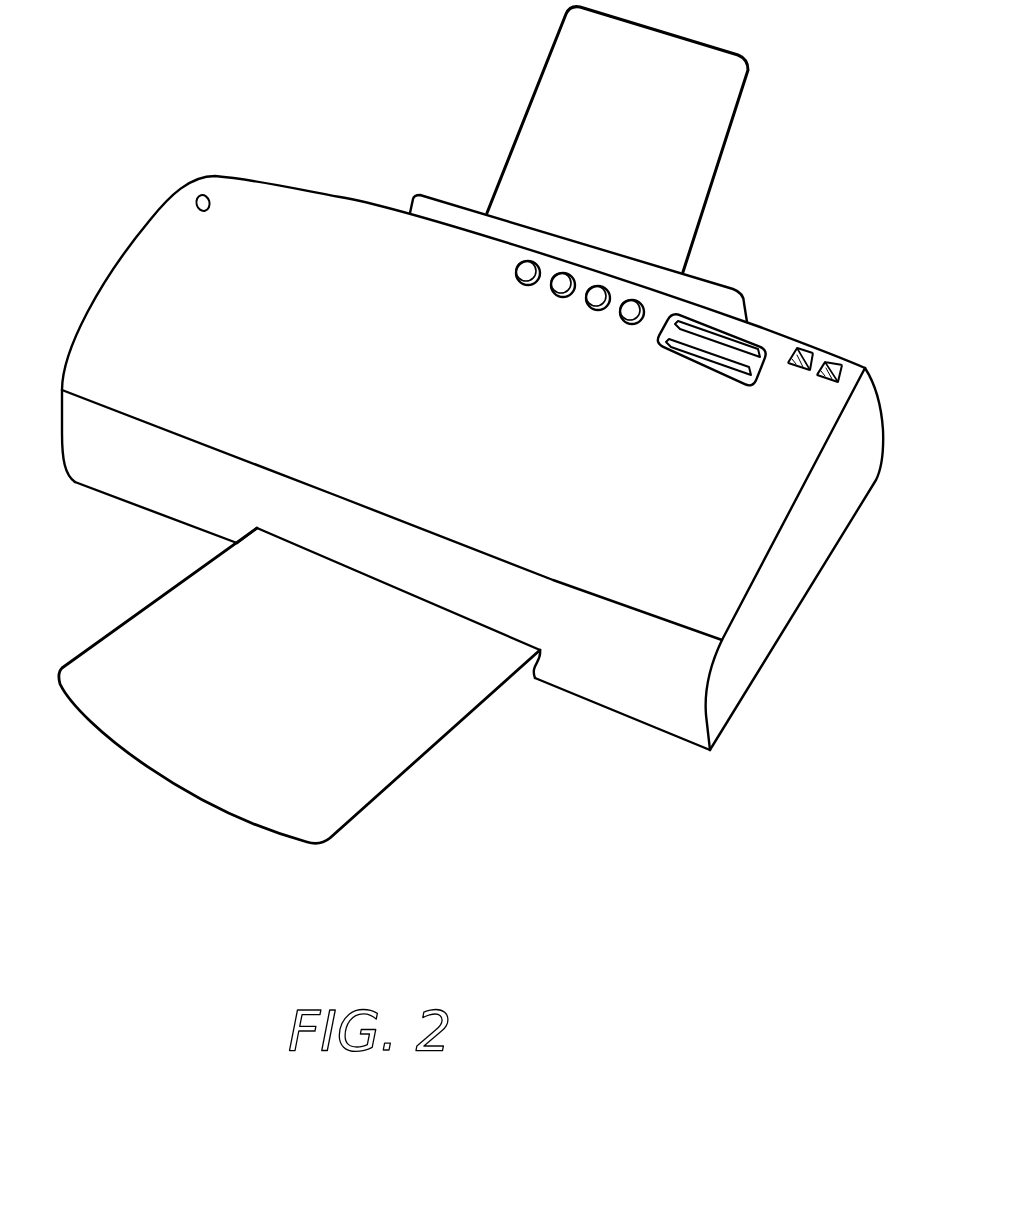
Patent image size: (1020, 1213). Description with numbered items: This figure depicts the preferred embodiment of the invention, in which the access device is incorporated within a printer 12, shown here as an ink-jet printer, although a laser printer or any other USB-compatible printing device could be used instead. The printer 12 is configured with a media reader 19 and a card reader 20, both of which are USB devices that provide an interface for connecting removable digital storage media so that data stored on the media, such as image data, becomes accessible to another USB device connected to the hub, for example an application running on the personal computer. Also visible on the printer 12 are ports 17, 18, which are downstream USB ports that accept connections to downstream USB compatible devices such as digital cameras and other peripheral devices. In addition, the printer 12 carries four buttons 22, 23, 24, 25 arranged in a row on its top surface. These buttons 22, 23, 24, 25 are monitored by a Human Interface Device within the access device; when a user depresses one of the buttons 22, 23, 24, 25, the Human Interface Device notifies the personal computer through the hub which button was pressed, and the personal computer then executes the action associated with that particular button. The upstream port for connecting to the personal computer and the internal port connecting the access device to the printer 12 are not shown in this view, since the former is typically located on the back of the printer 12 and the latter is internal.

The printer 12 is at (237, 92).
The port 17 is at (805, 350).
The port 18 is at (833, 363).
The media reader 19 is at (747, 342).
The card reader 20 is at (700, 352).
The button 22 is at (520, 274).
The button 23 is at (553, 292).
The button 24 is at (588, 305).
The button 25 is at (622, 316).